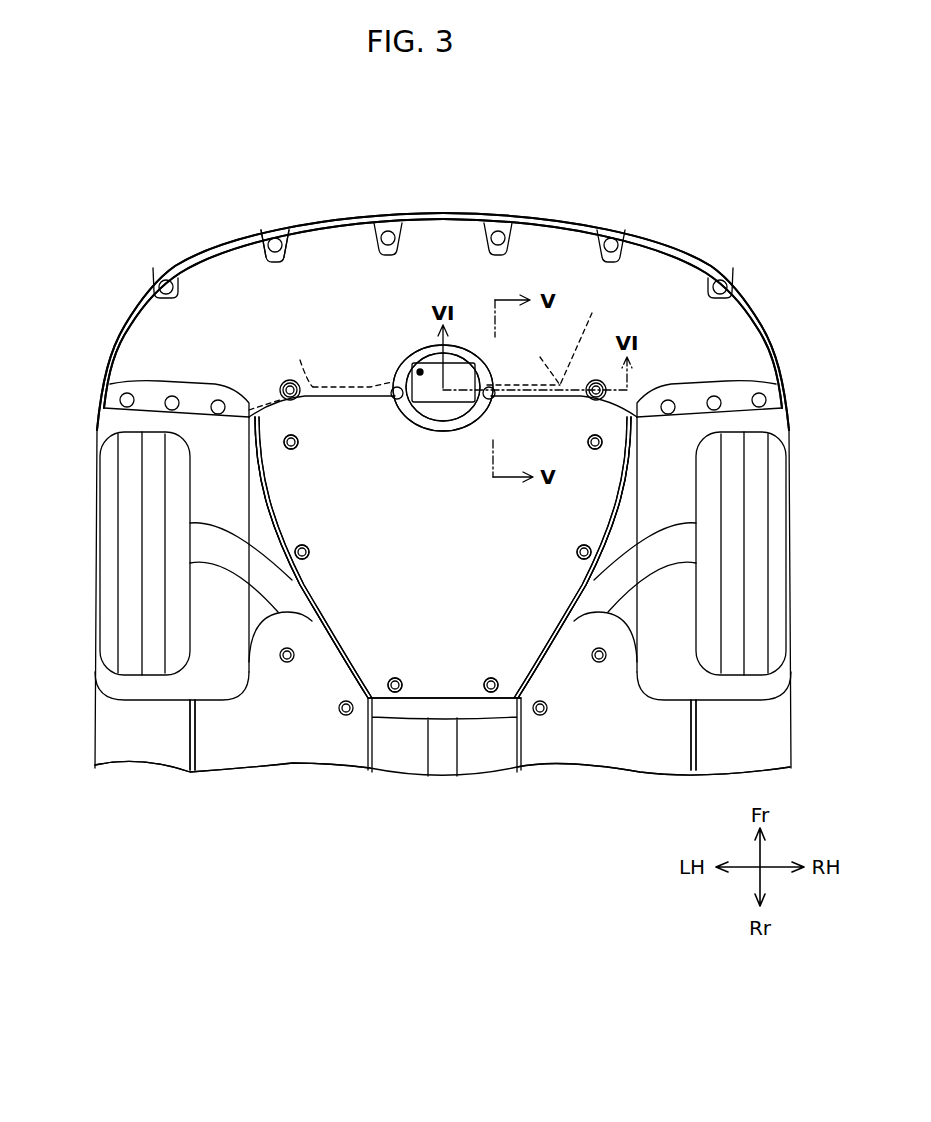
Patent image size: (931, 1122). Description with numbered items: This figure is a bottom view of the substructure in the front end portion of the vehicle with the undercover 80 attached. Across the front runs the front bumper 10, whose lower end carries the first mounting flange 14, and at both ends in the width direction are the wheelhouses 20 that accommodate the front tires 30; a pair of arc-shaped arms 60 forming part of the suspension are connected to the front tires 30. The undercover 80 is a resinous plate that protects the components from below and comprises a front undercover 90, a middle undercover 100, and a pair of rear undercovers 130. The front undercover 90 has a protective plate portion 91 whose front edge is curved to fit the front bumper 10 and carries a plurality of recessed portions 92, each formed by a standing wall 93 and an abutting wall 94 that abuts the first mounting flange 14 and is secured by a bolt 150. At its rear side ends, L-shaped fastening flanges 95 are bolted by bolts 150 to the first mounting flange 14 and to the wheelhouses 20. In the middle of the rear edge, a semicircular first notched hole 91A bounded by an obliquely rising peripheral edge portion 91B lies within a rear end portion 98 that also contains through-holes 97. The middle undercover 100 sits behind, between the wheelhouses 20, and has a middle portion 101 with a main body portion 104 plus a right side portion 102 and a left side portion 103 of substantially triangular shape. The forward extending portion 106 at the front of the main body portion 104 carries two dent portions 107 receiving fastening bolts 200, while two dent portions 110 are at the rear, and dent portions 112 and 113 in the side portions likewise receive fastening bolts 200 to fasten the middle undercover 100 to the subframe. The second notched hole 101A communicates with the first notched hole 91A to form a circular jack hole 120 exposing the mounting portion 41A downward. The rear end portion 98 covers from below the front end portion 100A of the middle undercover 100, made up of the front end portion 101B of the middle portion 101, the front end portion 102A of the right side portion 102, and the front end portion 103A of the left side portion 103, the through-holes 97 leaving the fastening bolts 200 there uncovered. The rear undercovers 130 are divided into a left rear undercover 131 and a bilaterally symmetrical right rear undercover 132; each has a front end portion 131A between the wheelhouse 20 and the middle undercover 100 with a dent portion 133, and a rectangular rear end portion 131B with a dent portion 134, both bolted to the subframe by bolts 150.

The front bumper 10 is at (576, 222).
The first mounting flange 14 is at (340, 222).
The wheelhouses 20 is at (66, 432).
The front tires 30 is at (100, 554).
The mounting portion 41A is at (460, 366).
The arms 60 is at (232, 566).
The undercover 80 is at (538, 240).
The front undercover 90 is at (442, 232).
The protective plate portion 91 is at (442, 287).
The first notched hole 91A is at (405, 358).
The peripheral edge portion 91B is at (418, 348).
The recessed portions 92 is at (265, 232).
The standing wall 93 is at (289, 250).
The abutting wall 94 is at (286, 229).
The fastening flanges 95 is at (108, 394).
The through-holes 97 is at (282, 384).
The rear end portion 98 is at (543, 357).
The middle undercover 100 is at (437, 690).
The front end portion 100A is at (520, 436).
The middle portion 101 is at (447, 535).
The second notched hole 101A is at (445, 432).
The front end portion 101B is at (427, 425).
The right side portion 102 is at (520, 535).
The front end portion 102A is at (593, 338).
The left side portion 103 is at (373, 535).
The front end portion 103A is at (300, 362).
The main body portion 104 is at (447, 578).
The forward extending portion 106 is at (460, 430).
The dent portions 107 is at (400, 404).
The dent portions 110 is at (392, 678).
The dent portions 112 is at (637, 400).
The dent portions 113 is at (272, 393).
The jack hole 120 is at (410, 362).
The rear undercovers 130 is at (442, 799).
The left rear undercover 131 is at (255, 768).
The front end portion 131A is at (268, 692).
The rear end portion 131B is at (322, 768).
The right rear undercover 132 is at (645, 768).
The dent portion 133 is at (279, 655).
The dent portion 134 is at (346, 716).
The bolt 150 is at (272, 252).
The fastening bolt 200 is at (512, 378).